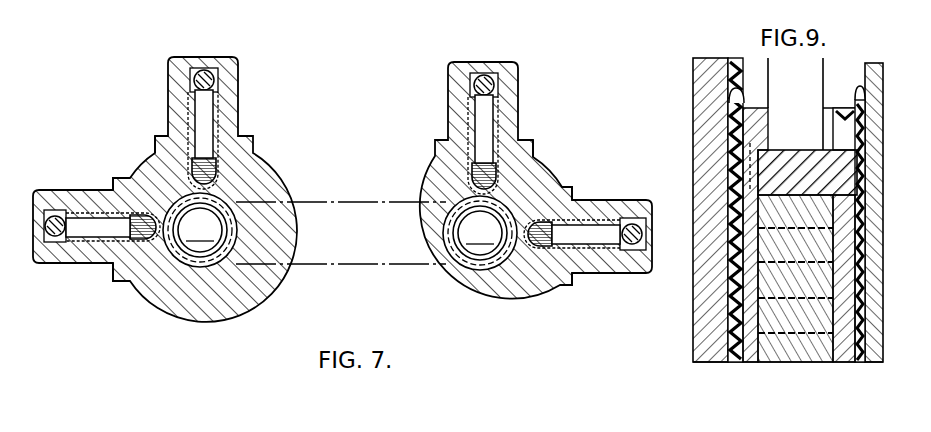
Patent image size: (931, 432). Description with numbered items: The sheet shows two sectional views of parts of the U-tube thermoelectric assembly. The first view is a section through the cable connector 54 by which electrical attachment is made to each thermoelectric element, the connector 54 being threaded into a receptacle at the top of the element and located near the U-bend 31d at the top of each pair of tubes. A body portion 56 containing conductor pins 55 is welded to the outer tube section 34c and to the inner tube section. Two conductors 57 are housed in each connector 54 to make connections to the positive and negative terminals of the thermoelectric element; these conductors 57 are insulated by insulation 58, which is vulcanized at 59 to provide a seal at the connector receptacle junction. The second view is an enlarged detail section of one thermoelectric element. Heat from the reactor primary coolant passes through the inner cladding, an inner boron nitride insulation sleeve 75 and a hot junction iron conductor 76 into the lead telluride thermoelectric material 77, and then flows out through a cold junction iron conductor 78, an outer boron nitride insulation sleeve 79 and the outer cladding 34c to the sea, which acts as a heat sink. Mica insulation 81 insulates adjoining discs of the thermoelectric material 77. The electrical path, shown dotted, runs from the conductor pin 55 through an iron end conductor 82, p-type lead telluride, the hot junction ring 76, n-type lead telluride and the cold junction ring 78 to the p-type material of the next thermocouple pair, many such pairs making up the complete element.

In FIG. 7, the cable connector 54 is at (272, 338).
In FIG. 7, the conductor pins 55 is at (197, 176).
In FIG. 7, the body portion 56 is at (282, 280).
In FIG. 7, the conductors 57 is at (194, 80).
In FIG. 7, the insulation 58 is at (175, 100).
In FIG. 7, the vulcanized seal 59 is at (162, 136).
In FIG. 7, the U-bend 31d is at (340, 231).
In FIG. 9, the outer cladding 34c is at (702, 74).
In FIG. 9, the inner boron nitride insulation sleeve 75 is at (858, 92).
In FIG. 9, the hot junction iron conductor 76 is at (843, 357).
In FIG. 9, the lead telluride thermoelectric material 77 is at (768, 352).
In FIG. 9, the cold junction iron conductor 78 is at (738, 352).
In FIG. 9, the outer boron nitride insulation sleeve 79 is at (744, 95).
In FIG. 9, the mica insulation 81 is at (822, 340).
In FIG. 9, the iron end conductor 82 is at (760, 124).